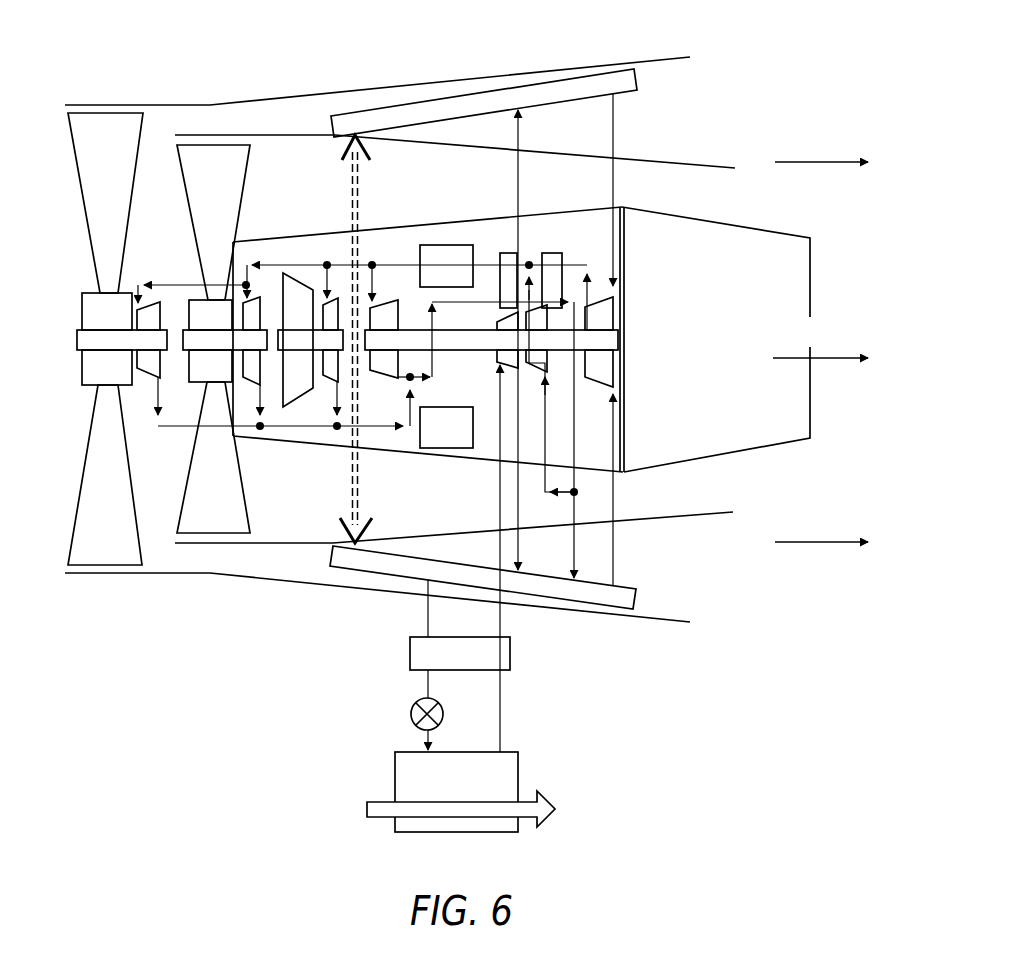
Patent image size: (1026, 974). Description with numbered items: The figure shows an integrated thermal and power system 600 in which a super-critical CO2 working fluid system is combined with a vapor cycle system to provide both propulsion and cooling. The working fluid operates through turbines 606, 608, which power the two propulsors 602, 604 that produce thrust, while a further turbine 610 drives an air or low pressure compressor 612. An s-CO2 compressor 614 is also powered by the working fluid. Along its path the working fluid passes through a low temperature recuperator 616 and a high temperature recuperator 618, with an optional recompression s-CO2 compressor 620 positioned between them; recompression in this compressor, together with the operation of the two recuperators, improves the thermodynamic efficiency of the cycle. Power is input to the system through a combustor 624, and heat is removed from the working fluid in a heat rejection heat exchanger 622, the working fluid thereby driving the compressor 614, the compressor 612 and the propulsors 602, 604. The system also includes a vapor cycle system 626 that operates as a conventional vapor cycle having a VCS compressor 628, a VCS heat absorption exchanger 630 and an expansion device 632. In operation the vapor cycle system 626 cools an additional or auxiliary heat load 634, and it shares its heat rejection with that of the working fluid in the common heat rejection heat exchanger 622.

The integrated thermal and power system 600 is at (726, 71).
The propulsor 602 is at (217, 143).
The propulsor 604 is at (104, 112).
The turbine 606 is at (263, 305).
The turbine 608 is at (148, 300).
The turbine 610 is at (337, 384).
The low pressure compressor 612 is at (312, 390).
The s-CO2 compressor 614 is at (596, 302).
The low temperature recuperator 616 is at (506, 251).
The high temperature recuperator 618 is at (550, 251).
The recompression s-CO2 compressor 620 is at (548, 358).
The heat rejection heat exchanger 622 is at (348, 568).
The combustor 624 is at (446, 243).
The vapor cycle system 626 is at (562, 761).
The VCS compressor 628 is at (497, 357).
The VCS heat absorption exchanger 630 is at (408, 655).
The expansion device 632 is at (410, 715).
The auxiliary heat load 634 is at (367, 808).